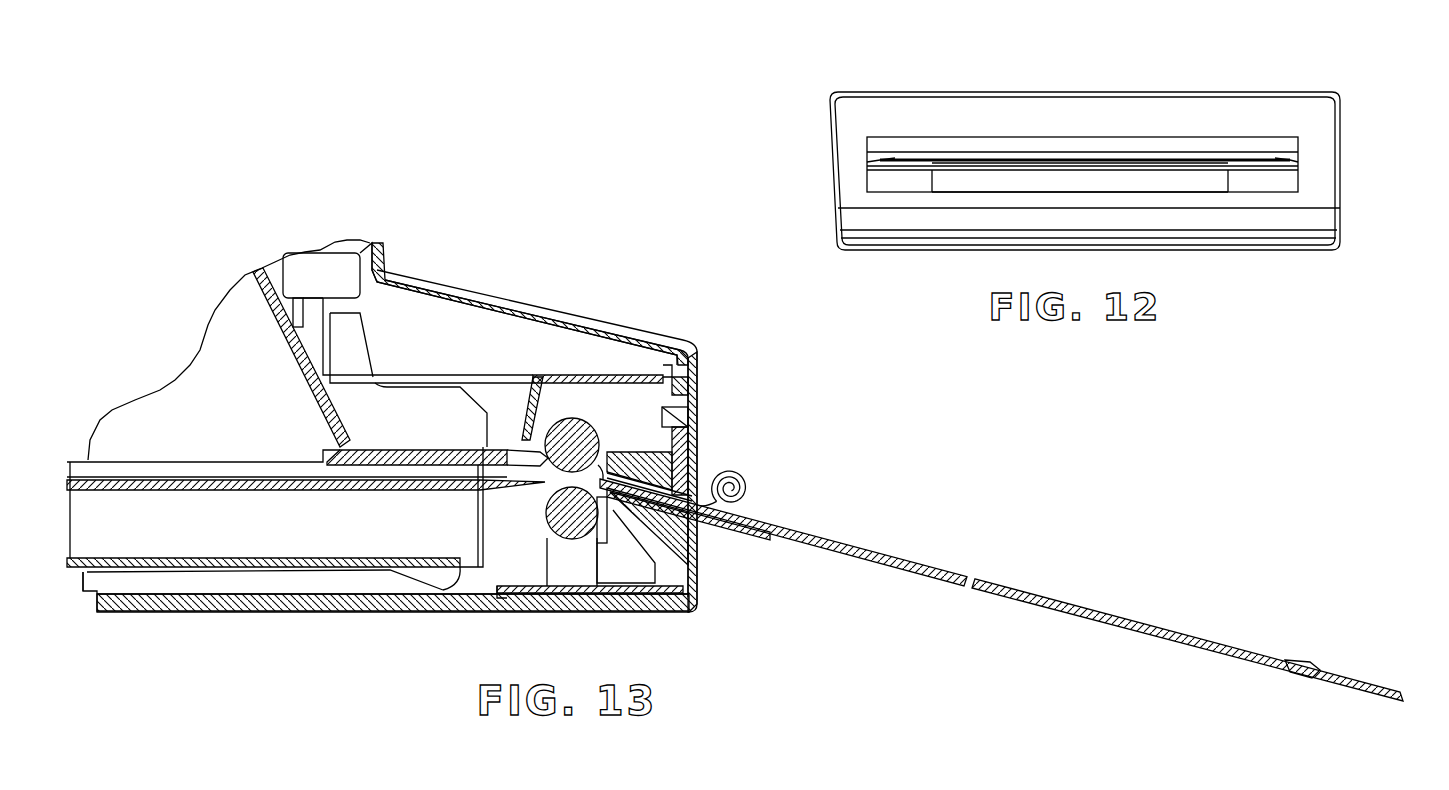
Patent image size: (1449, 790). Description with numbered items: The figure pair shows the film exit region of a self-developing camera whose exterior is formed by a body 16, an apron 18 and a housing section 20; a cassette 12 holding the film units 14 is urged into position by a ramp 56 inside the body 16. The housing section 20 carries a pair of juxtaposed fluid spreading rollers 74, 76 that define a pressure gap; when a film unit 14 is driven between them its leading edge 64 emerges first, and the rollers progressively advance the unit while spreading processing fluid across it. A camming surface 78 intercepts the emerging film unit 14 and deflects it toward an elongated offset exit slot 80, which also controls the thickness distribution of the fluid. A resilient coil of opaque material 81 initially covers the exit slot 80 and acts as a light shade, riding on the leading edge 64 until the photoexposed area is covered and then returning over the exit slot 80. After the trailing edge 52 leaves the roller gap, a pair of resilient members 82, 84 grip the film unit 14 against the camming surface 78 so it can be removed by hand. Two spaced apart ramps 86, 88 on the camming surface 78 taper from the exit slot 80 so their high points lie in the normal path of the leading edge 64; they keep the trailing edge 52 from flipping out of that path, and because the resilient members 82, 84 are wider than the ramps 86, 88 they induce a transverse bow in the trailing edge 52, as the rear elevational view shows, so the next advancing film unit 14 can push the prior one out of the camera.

In FIG. 13, the cassette 12 is at (498, 554).
In FIG. 12, the film unit 14 is at (1099, 170).
In FIG. 13, the film unit 14 is at (286, 500).
In FIG. 13, the body 16 is at (293, 612).
In FIG. 13, the apron 18 is at (497, 297).
In FIG. 12, the housing section 20 is at (1099, 88).
In FIG. 13, the housing section 20 is at (708, 586).
In FIG. 12, the trailing edge 52 is at (1053, 160).
In FIG. 13, the trailing edge 52 is at (626, 540).
In FIG. 13, the ramp 56 is at (215, 585).
In FIG. 13, the leading edge 64 is at (603, 477).
In FIG. 13, the fluid spreading roller 74 is at (568, 426).
In FIG. 13, the fluid spreading roller 76 is at (572, 540).
In FIG. 12, the camming surface 78 is at (960, 160).
In FIG. 13, the camming surface 78 is at (620, 470).
In FIG. 13, the exit slot 80 is at (683, 539).
In FIG. 13, the coil 81 is at (744, 481).
In FIG. 12, the resilient member 82 is at (932, 178).
In FIG. 13, the resilient member 82 is at (633, 498).
In FIG. 12, the resilient member 84 is at (1228, 180).
In FIG. 12, the ramp 86 is at (893, 160).
In FIG. 13, the ramp 86 is at (688, 442).
In FIG. 12, the ramp 88 is at (1283, 160).